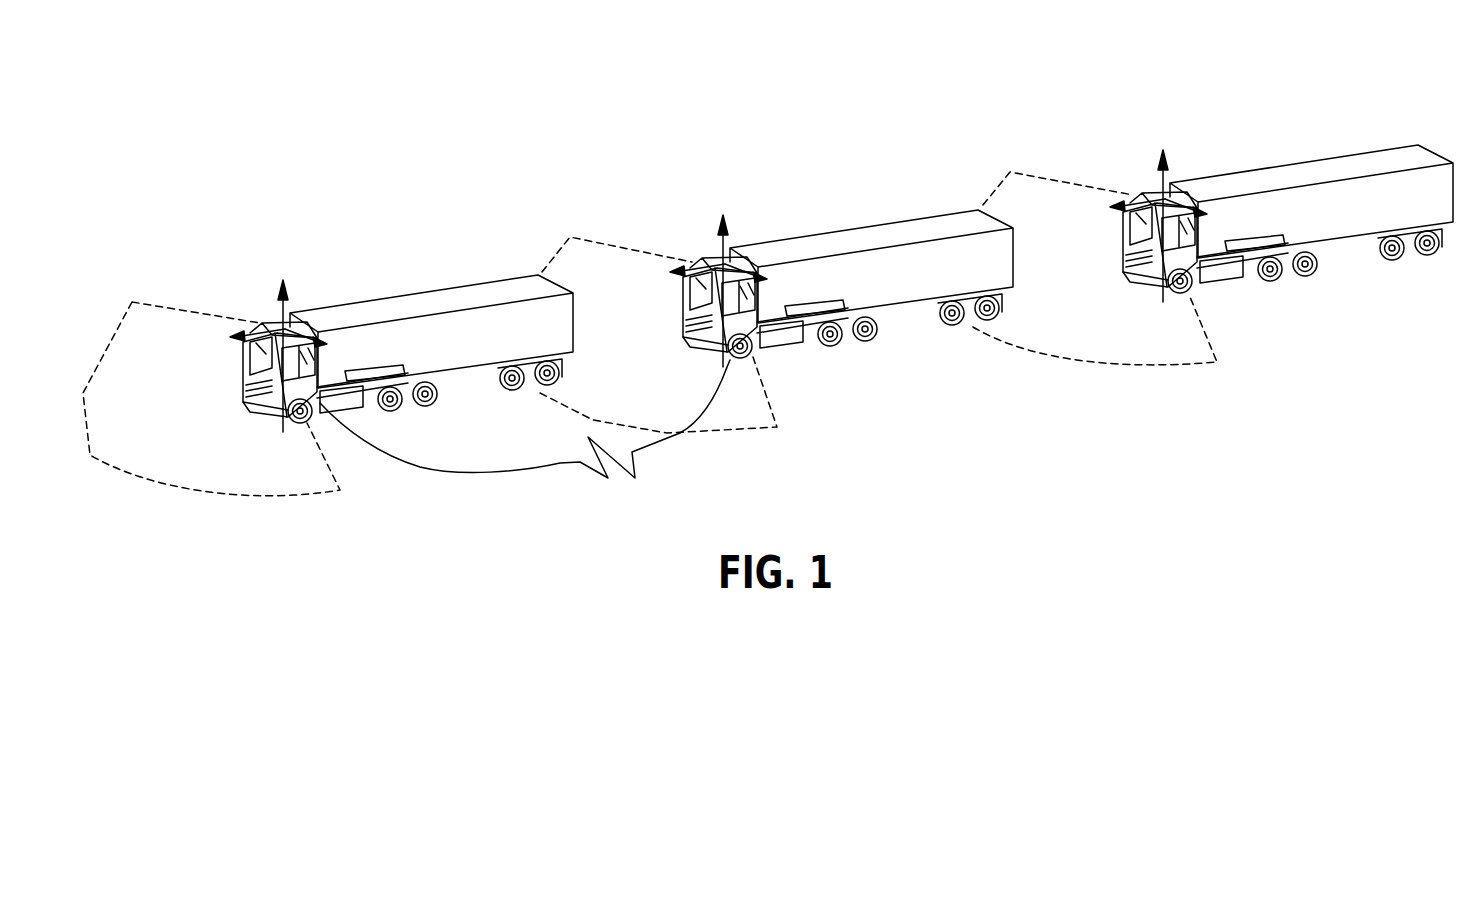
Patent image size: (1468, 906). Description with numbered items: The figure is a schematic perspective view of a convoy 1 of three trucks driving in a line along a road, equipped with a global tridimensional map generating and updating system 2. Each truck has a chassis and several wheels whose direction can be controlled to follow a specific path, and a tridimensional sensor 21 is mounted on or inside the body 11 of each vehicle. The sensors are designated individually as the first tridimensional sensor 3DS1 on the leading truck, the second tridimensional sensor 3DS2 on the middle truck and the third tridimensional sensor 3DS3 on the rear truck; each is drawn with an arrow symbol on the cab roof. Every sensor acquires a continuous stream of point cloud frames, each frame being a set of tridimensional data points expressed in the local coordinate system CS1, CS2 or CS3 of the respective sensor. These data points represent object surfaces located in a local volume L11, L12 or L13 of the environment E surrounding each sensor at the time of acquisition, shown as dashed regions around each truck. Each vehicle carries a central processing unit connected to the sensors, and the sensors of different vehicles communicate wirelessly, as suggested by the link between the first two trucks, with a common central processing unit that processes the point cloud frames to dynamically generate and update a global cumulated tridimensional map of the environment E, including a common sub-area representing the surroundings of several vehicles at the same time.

The convoy 1 is at (707, 113).
The global tridimensional map generating and updating system 2 is at (868, 113).
The body 11 is at (875, 238).
The tridimensional sensor 21 is at (277, 323).
The first tridimensional sensor 3DS1 is at (283, 320).
The second tridimensional sensor 3DS2 is at (715, 257).
The third tridimensional sensor 3DS3 is at (1153, 190).
The local coordinate system of the first sensor CS1 is at (290, 305).
The local coordinate system of the second sensor CS2 is at (727, 240).
The local coordinate system of the third sensor CS3 is at (1165, 175).
The local volume of the first sensor L11 is at (293, 497).
The local volume of the second sensor L12 is at (755, 442).
The local volume of the third sensor L13 is at (1173, 373).
The environment E is at (594, 419).